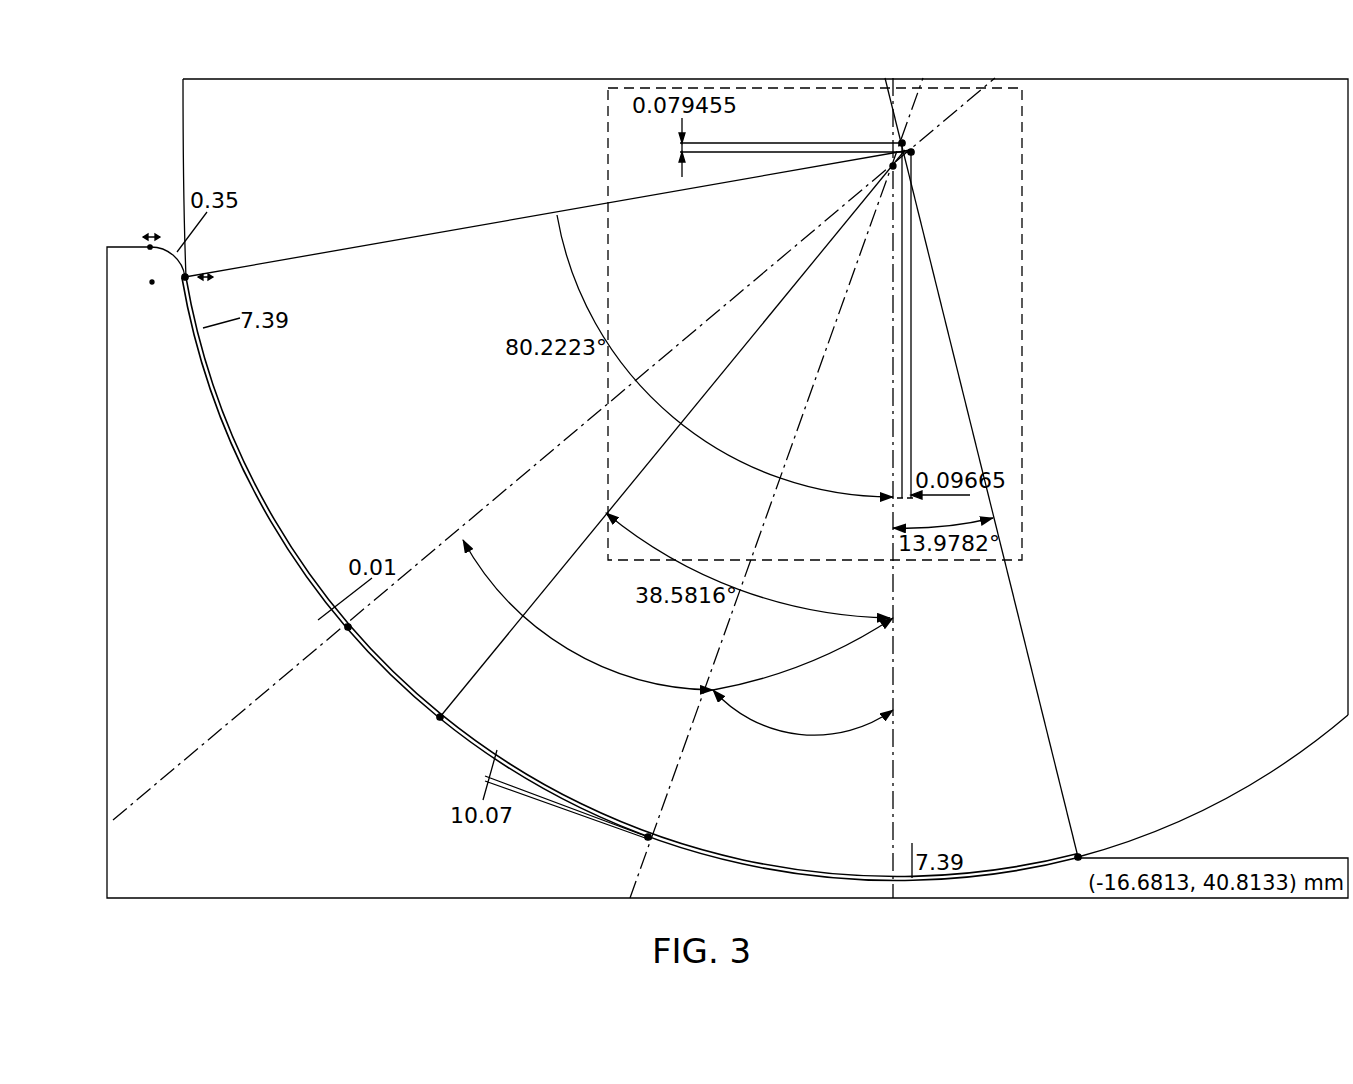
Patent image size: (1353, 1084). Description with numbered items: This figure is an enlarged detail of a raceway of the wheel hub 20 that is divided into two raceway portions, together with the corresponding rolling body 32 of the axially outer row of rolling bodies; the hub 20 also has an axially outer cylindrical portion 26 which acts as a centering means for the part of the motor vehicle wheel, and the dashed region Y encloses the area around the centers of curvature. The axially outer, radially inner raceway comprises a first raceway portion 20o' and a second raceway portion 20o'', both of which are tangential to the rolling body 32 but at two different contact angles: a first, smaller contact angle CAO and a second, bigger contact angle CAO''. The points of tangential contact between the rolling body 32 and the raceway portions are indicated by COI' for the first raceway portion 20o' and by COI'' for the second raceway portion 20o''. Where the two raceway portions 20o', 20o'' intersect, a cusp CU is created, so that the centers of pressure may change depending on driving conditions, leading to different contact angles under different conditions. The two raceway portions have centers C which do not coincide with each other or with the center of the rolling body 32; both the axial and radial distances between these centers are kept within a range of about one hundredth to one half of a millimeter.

The wheel hub 20 is at (296, 826).
The axially outer cylindrical portion 26 is at (776, 488).
The rolling body 32 is at (1211, 323).
The detail region Y is at (1024, 163).
The first raceway portion 20o' is at (760, 832).
The second raceway portion 20o'' is at (246, 496).
The center of raceway portion C is at (981, 488).
The cusp CU is at (432, 719).
The point of tangential contact COI' is at (567, 808).
The point of tangential contact COI'' is at (554, 449).
The contact angle CAO is at (803, 728).
The second bigger contact angle CAO'' is at (588, 622).